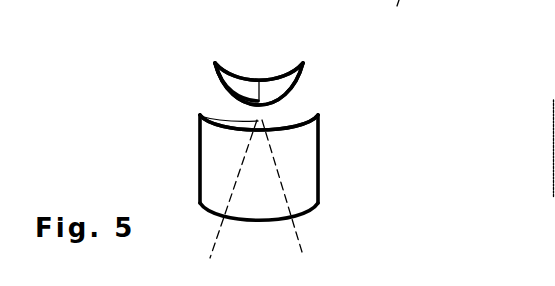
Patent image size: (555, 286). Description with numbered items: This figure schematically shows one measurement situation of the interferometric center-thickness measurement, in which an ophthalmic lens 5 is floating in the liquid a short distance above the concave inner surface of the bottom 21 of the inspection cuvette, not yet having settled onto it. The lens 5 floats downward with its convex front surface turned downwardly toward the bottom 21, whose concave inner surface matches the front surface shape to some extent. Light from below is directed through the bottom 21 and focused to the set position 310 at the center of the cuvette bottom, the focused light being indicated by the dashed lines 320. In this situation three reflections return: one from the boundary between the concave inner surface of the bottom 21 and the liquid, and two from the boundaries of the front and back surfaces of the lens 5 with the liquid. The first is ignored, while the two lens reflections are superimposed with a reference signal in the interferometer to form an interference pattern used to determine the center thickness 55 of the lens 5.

The lens 5 is at (240, 80).
The center thickness 55 is at (220, 86).
The set position 310 is at (201, 116).
The bottom 21 is at (305, 178).
The dashed lines 320 is at (303, 245).